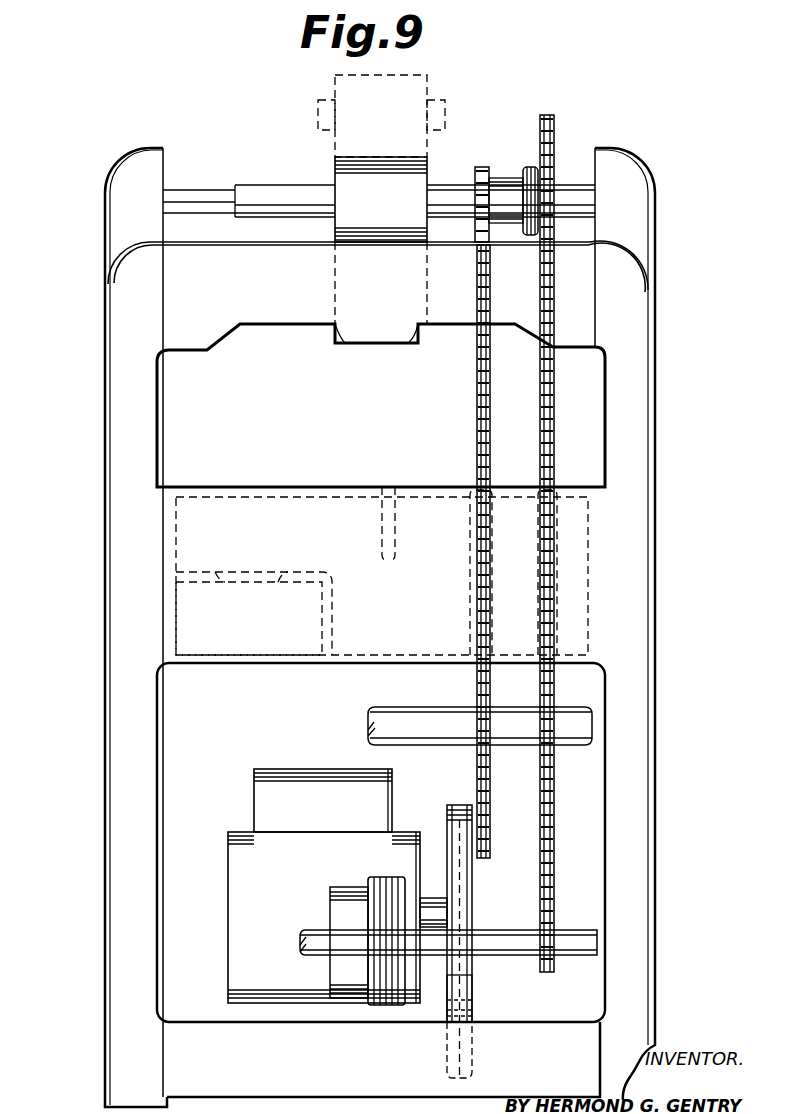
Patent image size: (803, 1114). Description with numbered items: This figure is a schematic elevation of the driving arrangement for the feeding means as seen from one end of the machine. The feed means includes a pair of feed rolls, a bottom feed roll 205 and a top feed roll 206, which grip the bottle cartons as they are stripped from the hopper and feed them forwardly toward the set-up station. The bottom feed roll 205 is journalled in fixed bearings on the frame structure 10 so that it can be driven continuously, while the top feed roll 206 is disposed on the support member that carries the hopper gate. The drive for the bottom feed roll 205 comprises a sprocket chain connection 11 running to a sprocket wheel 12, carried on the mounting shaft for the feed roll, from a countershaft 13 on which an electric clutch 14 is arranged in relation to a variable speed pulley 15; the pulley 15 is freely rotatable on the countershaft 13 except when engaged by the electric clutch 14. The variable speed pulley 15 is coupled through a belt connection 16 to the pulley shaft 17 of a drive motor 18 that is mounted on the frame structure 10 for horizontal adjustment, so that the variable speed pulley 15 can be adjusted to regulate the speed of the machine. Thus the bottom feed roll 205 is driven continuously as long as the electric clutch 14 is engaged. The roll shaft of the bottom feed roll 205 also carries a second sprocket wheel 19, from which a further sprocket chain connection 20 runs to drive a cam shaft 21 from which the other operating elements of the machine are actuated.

The frame structure 10 is at (103, 566).
The sprocket chain connection 11 is at (556, 404).
The sprocket wheel 12 is at (556, 212).
The countershaft 13 is at (497, 930).
The electric clutch 14 is at (345, 905).
The variable speed pulley 15 is at (473, 995).
The belt connection 16 is at (458, 805).
The pulley shaft 17 is at (428, 898).
The drive motor 18 is at (240, 858).
The second sprocket wheel 19 is at (474, 225).
The sprocket chain connection 20 is at (476, 418).
The cam shaft 21 is at (432, 692).
The bottom feed roll 205 is at (388, 242).
The top feed roll 206 is at (340, 148).